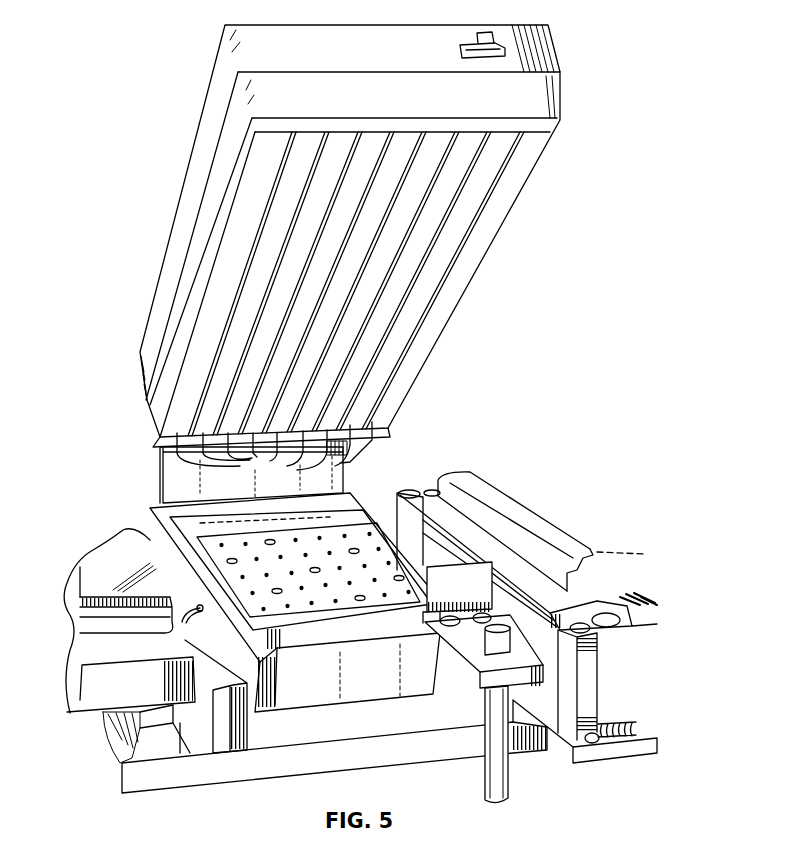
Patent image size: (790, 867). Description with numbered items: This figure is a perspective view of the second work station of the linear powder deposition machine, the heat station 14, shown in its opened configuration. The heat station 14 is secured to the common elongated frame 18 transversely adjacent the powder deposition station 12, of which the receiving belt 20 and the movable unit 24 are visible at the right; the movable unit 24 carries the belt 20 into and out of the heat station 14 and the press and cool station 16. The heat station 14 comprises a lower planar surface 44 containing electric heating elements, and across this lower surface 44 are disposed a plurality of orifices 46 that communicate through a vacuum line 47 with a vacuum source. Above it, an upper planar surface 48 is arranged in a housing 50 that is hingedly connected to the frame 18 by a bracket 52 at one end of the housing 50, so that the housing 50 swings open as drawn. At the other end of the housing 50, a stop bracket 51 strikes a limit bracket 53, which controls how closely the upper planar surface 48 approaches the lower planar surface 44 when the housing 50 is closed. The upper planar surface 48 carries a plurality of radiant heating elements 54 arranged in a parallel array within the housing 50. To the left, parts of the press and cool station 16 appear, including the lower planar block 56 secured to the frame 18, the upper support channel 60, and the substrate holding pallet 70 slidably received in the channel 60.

The powder deposition station 12 is at (555, 630).
The heat station 14 is at (144, 470).
The press and cool station 16 is at (124, 519).
The elongated frame 18 is at (269, 775).
The receiving belt 20 is at (647, 612).
The movable unit 24 is at (590, 700).
The lower planar surface 44 is at (240, 672).
The orifices 46 is at (338, 603).
The vacuum line 47 is at (191, 624).
The upper planar surface 48 is at (324, 300).
The housing 50 is at (543, 110).
The stop bracket 51 is at (458, 53).
The bracket 52 is at (335, 484).
The limit bracket 53 is at (470, 596).
The radiant heating elements 54 is at (274, 448).
The lower planar block 56 is at (80, 682).
The upper support channel 60 is at (95, 563).
The substrate holding pallet 70 is at (85, 620).